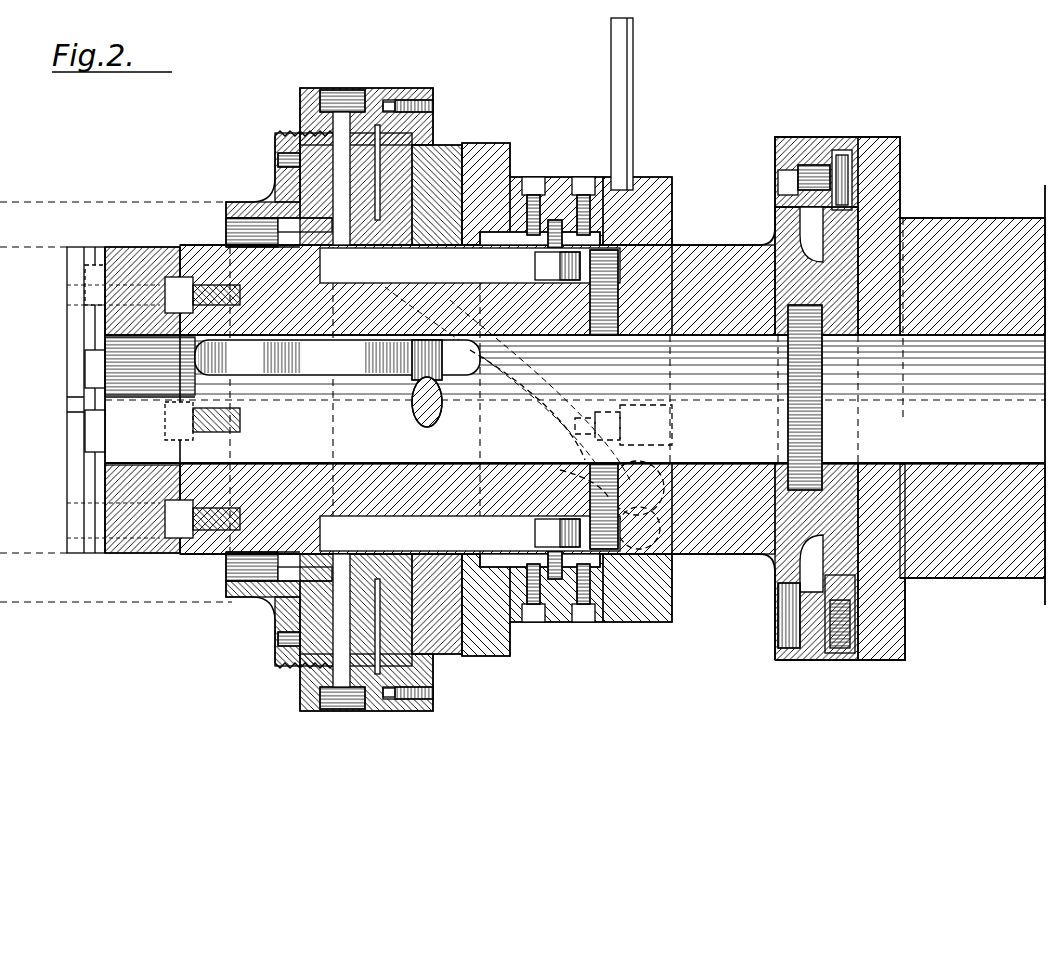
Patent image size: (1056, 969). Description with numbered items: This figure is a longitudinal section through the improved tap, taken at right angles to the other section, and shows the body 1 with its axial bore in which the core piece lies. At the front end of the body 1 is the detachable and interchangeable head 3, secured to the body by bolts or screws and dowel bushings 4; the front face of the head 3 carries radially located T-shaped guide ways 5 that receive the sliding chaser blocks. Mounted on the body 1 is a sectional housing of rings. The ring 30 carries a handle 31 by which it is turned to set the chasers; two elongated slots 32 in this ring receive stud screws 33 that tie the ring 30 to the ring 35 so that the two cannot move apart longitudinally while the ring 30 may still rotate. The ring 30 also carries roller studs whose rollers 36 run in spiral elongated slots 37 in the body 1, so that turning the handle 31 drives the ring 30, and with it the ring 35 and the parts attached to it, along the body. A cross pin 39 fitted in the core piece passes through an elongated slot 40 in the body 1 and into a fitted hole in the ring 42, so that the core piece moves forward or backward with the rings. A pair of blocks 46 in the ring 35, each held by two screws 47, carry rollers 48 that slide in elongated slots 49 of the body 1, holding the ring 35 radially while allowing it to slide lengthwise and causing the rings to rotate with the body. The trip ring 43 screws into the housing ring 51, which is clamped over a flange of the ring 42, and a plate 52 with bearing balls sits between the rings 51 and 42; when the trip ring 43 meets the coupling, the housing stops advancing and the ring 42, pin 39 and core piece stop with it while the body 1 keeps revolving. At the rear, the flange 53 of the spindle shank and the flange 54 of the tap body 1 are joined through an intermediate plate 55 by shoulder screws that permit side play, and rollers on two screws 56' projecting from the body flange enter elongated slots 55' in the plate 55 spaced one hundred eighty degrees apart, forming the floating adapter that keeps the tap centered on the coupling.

The body 1 is at (327, 472).
The head 3 is at (133, 255).
The dowel bushings 4 is at (176, 247).
The guide ways 5 is at (95, 268).
The ring 30 is at (656, 176).
The handle 31 is at (630, 68).
The elongated slots 32 is at (672, 457).
The stud screws 33 is at (676, 421).
The ring 35 is at (500, 150).
The rollers 36 is at (563, 470).
The spiral elongated slots 37 is at (527, 405).
The cross pin 39 is at (425, 420).
The elongated slot 40 is at (292, 365).
The ring 42 is at (446, 148).
The trip ring 43 is at (277, 157).
The blocks 46 is at (556, 226).
The screws 47 is at (533, 176).
The roller 48 is at (533, 268).
The elongated slots 49 is at (470, 399).
The housing ring 51 is at (421, 87).
The plate 52 is at (433, 116).
The flange 53 is at (882, 138).
The flange 54 is at (786, 662).
The plate 55 is at (845, 433).
The elongated slots 55' is at (875, 440).
The screws 56' is at (831, 393).